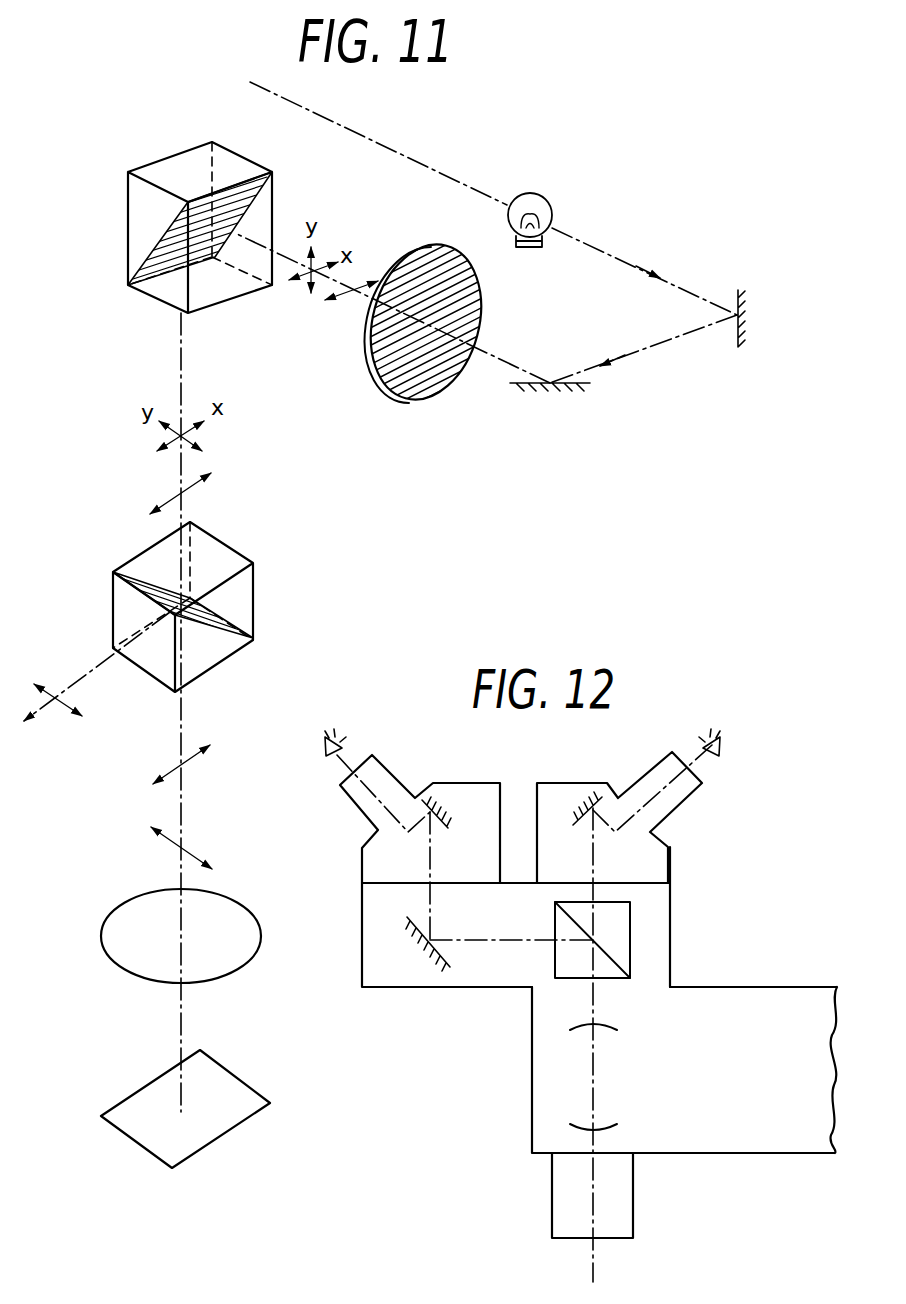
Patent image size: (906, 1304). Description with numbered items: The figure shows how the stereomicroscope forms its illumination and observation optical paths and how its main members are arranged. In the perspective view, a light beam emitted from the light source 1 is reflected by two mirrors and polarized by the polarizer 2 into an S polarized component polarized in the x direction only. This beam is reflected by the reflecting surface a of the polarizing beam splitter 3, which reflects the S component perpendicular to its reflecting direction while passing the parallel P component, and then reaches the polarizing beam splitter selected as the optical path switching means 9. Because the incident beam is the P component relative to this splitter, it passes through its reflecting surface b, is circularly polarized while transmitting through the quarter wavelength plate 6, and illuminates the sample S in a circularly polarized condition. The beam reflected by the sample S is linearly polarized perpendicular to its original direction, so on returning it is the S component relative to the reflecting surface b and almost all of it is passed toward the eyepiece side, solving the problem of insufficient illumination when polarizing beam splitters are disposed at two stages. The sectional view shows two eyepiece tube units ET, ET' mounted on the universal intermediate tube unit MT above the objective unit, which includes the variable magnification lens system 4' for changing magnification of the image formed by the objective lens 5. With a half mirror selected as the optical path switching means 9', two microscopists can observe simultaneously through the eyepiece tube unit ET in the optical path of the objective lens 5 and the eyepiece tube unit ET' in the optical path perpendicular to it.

In FIG. 11, the light source 1 is at (538, 194).
In FIG. 11, the polarizer 2 is at (437, 244).
In FIG. 11, the polarizing beam splitter 3 is at (162, 160).
In FIG. 11, the reflecting surface a is at (252, 199).
In FIG. 11, the optical path switching means 9 is at (176, 596).
In FIG. 11, the reflecting surface b is at (153, 583).
In FIG. 11, the quarter wavelength plate 6 is at (131, 917).
In FIG. 11, the sample S is at (139, 1091).
In FIG. 12, the eyepiece tube unit ET' is at (400, 819).
In FIG. 12, the eyepiece tube unit ET is at (641, 817).
In FIG. 12, the optical path switching means 9' is at (640, 934).
In FIG. 12, the universal intermediate tube unit MT is at (670, 935).
In FIG. 12, the variable magnification lens system 4' is at (658, 1070).
In FIG. 12, the objective lens 5 is at (565, 1197).